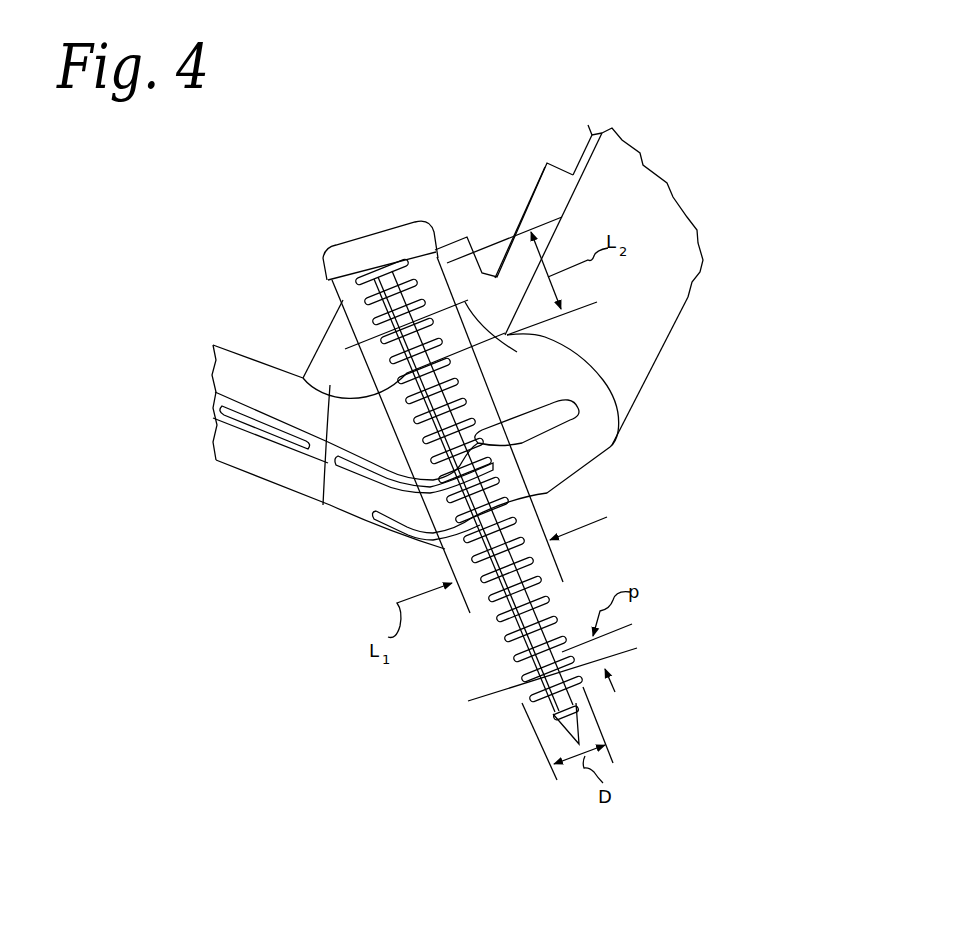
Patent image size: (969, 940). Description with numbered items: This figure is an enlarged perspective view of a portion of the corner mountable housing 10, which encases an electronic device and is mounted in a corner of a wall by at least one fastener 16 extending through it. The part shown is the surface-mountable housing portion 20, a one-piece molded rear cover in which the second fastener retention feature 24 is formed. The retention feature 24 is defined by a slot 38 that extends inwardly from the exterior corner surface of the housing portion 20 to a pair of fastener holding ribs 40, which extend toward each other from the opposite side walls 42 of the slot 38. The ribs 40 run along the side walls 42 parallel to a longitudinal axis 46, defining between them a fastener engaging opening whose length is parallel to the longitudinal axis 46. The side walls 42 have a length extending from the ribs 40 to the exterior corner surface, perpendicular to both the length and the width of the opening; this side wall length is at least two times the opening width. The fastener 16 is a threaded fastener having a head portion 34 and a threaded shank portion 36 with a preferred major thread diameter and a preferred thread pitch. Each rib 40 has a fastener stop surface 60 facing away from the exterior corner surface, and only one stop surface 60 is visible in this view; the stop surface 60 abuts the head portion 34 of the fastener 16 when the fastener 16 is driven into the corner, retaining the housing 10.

The corner mountable housing 10 is at (699, 301).
The fastener 16 is at (587, 693).
The surface-mountable housing portion 20 is at (578, 142).
The second fastener retention feature 24 is at (459, 242).
The head portion 34 is at (416, 262).
The threaded shank portion 36 is at (527, 660).
The slot 38 is at (328, 334).
The fastener holding ribs 40 is at (345, 294).
The side walls 42 is at (323, 505).
The longitudinal axis 46 is at (517, 352).
The fastener stop surface 60 is at (410, 268).